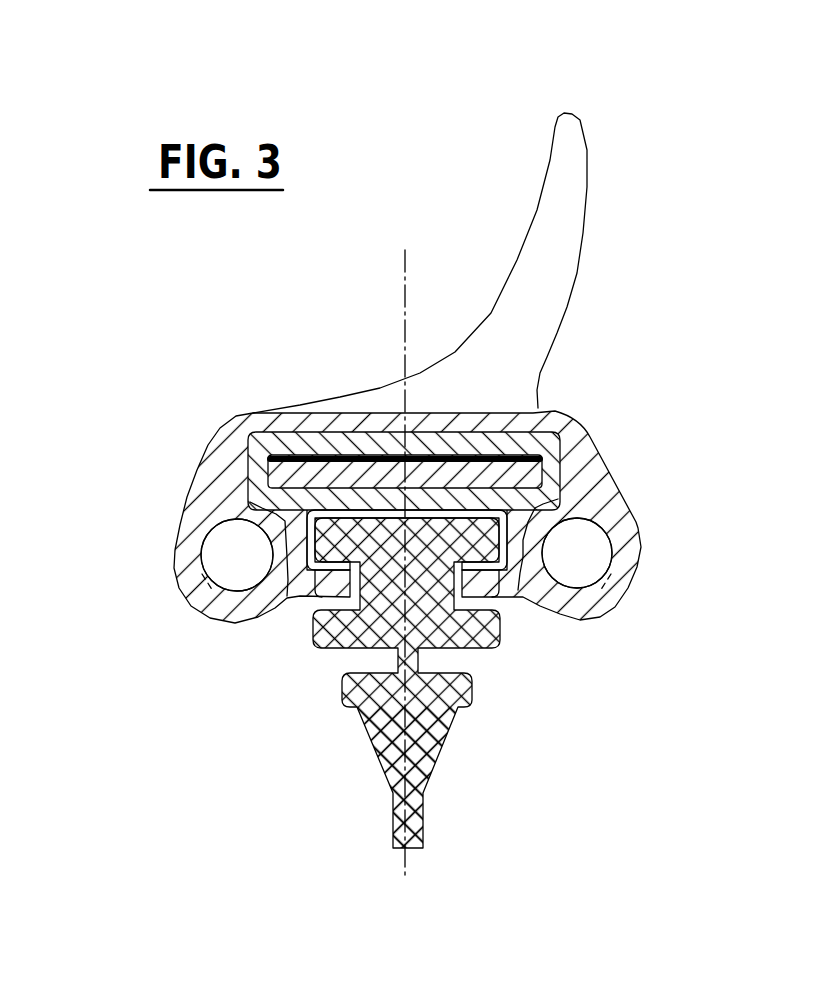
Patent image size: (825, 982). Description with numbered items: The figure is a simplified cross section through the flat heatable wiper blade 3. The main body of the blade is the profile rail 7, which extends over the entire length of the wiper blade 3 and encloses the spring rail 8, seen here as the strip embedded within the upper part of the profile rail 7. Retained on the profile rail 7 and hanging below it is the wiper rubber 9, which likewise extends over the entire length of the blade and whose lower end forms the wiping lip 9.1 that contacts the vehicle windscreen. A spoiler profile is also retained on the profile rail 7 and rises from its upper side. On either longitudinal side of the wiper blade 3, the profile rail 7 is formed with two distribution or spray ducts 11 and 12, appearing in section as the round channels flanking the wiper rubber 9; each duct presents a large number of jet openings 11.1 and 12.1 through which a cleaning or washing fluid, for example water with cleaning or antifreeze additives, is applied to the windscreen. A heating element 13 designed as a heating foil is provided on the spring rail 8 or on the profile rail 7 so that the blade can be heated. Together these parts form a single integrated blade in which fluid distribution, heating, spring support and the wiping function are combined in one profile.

The wiper blade 3 is at (628, 168).
The profile rail 7 is at (407, 448).
The spring rail 8 is at (405, 381).
The wiper rubber 9 is at (385, 679).
The wiping lip 9.1 is at (415, 785).
The distribution or spray duct 11 is at (217, 554).
The jet openings 11.1 is at (201, 604).
The distribution or spray duct 12 is at (595, 548).
The jet openings 12.1 is at (613, 604).
The heating element 13 is at (463, 263).